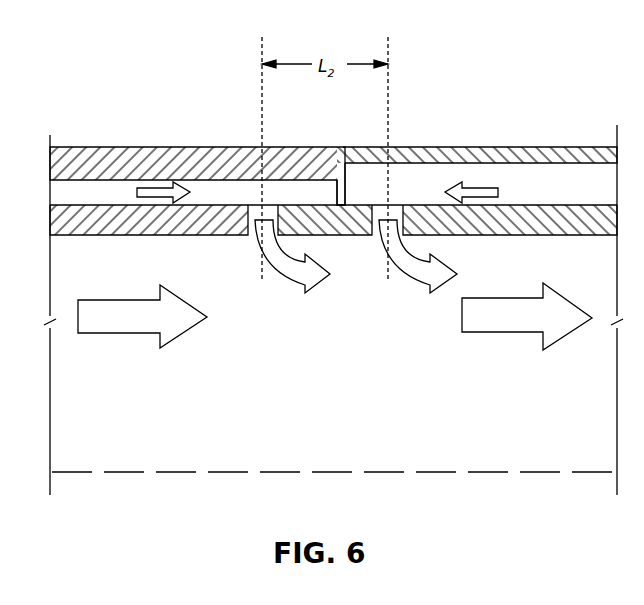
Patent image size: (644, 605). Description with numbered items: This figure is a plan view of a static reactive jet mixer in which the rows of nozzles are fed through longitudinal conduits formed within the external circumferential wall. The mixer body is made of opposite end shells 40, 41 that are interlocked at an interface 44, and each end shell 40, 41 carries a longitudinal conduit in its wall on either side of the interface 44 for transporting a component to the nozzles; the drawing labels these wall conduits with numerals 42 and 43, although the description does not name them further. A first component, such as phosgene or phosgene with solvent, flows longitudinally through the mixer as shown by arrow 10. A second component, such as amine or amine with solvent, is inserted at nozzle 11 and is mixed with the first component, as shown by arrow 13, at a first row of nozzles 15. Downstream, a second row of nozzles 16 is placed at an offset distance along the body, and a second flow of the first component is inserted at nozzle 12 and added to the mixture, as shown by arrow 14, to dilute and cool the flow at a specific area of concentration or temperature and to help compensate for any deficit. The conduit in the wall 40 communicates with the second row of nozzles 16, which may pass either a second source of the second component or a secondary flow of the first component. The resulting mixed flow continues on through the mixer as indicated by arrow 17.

The arrow (flow of first component) 10 is at (120, 334).
The nozzle (amine inlet) 11 is at (158, 184).
The nozzle (second flow of first component) 12 is at (477, 184).
The arrow (mixing of second component) 13 is at (292, 287).
The arrow (addition of second flow) 14 is at (410, 283).
The first row of nozzles 15 is at (229, 238).
The second row of nozzles 16 is at (352, 240).
The arrow (outlet flow) 17 is at (504, 333).
The end shell 40 is at (421, 147).
The end shell 41 is at (204, 147).
The first channel 42 is at (86, 192).
The second channel 43 is at (551, 187).
The interface 44 is at (309, 147).